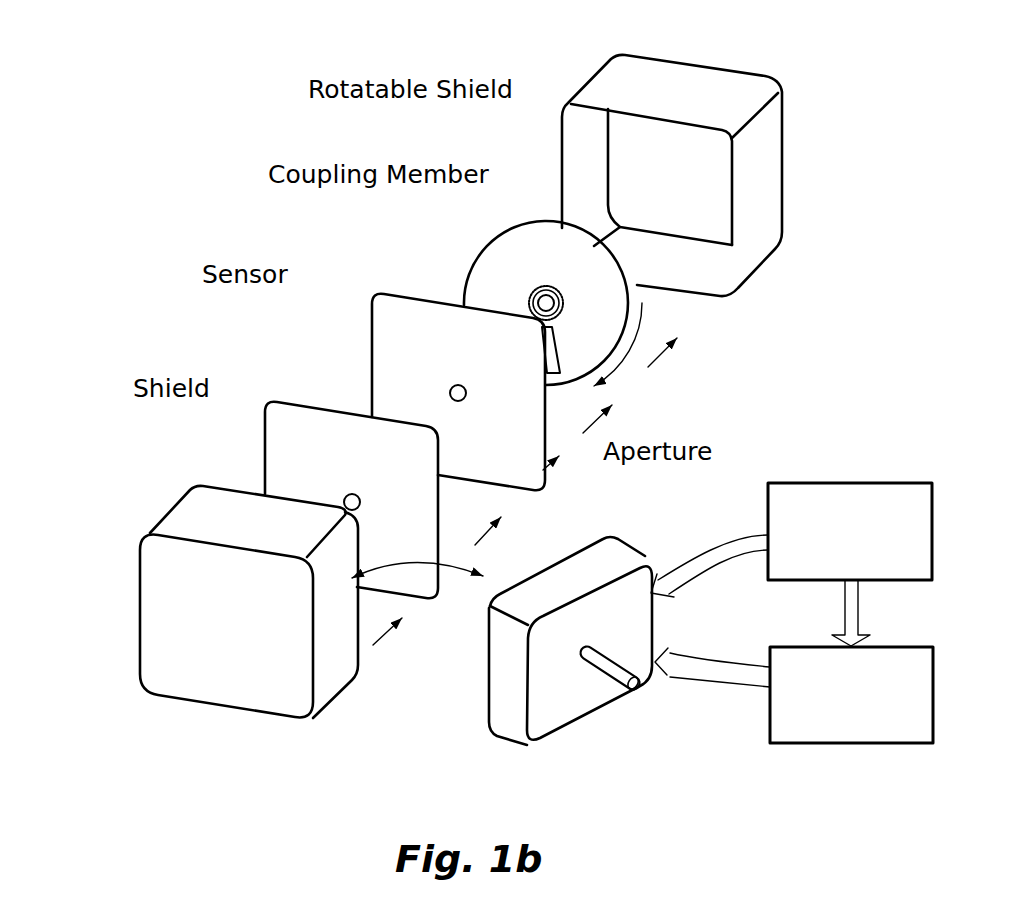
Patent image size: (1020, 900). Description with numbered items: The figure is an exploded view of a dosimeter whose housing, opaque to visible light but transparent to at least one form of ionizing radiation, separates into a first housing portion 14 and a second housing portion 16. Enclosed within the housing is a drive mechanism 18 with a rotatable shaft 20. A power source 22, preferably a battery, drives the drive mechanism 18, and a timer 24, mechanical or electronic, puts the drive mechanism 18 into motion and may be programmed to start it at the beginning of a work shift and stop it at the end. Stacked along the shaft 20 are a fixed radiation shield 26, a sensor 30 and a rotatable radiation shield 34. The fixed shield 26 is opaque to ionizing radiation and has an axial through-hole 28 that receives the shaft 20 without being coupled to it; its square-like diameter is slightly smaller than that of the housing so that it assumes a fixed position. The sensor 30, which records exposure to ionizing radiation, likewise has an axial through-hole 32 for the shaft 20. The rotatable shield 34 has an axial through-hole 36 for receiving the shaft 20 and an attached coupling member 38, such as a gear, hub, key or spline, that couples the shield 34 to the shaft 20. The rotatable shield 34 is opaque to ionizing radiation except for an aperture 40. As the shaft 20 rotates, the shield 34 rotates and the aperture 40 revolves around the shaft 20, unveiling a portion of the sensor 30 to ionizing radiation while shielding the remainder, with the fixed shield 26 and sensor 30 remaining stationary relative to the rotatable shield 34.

The first housing portion 14 is at (137, 658).
The second housing portion 16 is at (785, 192).
The drive mechanism 18 is at (652, 562).
The rotatable shaft 20 is at (603, 677).
The power source 22 is at (850, 531).
The timer 24 is at (851, 695).
The fixed radiation shield 26 is at (263, 425).
The axial through-hole 28 is at (344, 501).
The sensor 30 is at (372, 368).
The axial through-hole 32 is at (450, 393).
The rotatable radiation shield 34 is at (525, 221).
The axial through-hole 36 is at (530, 300).
The coupling member 38 is at (540, 288).
The aperture 40 is at (553, 365).